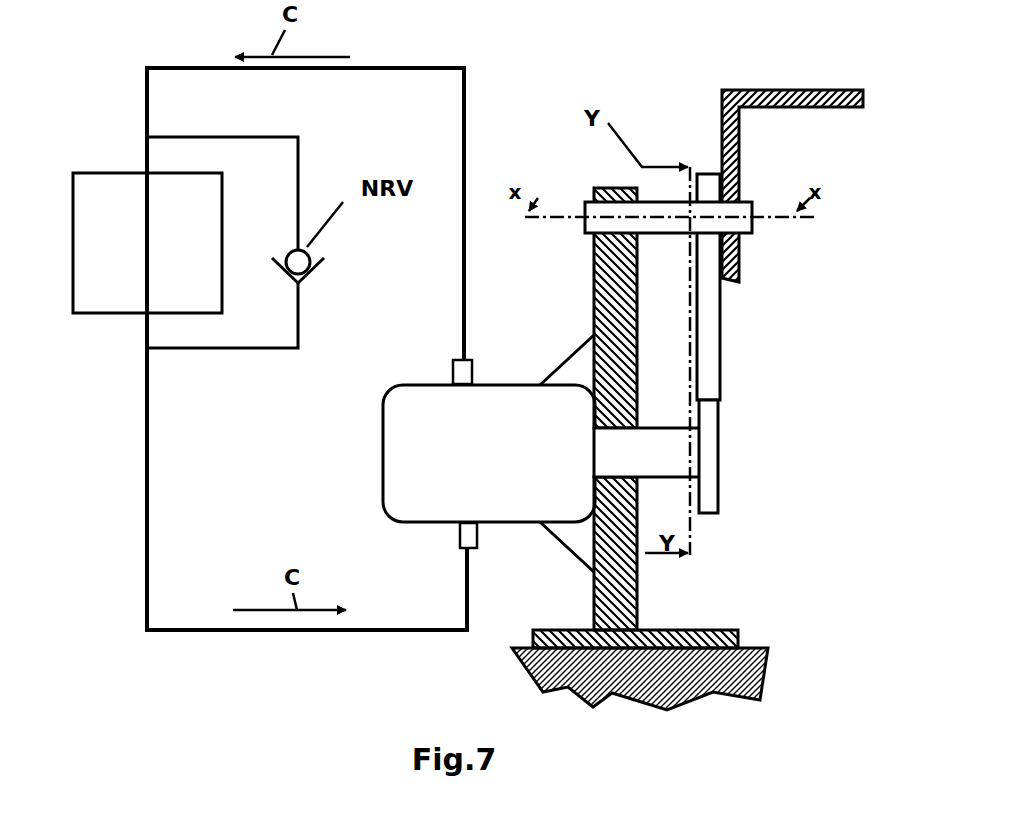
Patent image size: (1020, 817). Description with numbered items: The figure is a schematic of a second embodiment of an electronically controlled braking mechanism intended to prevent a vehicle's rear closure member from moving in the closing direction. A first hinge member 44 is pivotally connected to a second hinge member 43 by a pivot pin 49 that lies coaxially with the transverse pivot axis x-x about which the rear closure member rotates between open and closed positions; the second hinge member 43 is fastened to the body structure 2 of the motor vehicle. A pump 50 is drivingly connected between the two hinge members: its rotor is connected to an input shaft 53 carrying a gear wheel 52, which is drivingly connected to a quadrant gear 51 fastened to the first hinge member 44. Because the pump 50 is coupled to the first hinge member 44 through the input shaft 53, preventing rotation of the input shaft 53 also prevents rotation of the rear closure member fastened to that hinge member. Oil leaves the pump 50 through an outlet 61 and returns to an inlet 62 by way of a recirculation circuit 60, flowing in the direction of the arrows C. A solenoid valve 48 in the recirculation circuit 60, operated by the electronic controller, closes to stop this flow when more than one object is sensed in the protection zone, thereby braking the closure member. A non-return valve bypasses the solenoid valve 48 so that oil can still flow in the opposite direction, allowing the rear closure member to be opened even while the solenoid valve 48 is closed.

The body structure 2 is at (522, 667).
The second hinge member 43 is at (740, 637).
The first hinge member 44 is at (780, 90).
The solenoid valve 48 is at (134, 278).
The pivot pin 49 is at (585, 233).
The pump 50 is at (382, 447).
The quadrant gear 51 is at (708, 173).
The gear wheel 52 is at (718, 417).
The input shaft 53 is at (631, 471).
The recirculation circuit 60 is at (145, 443).
The outlet 61 is at (449, 368).
The inlet 62 is at (455, 538).